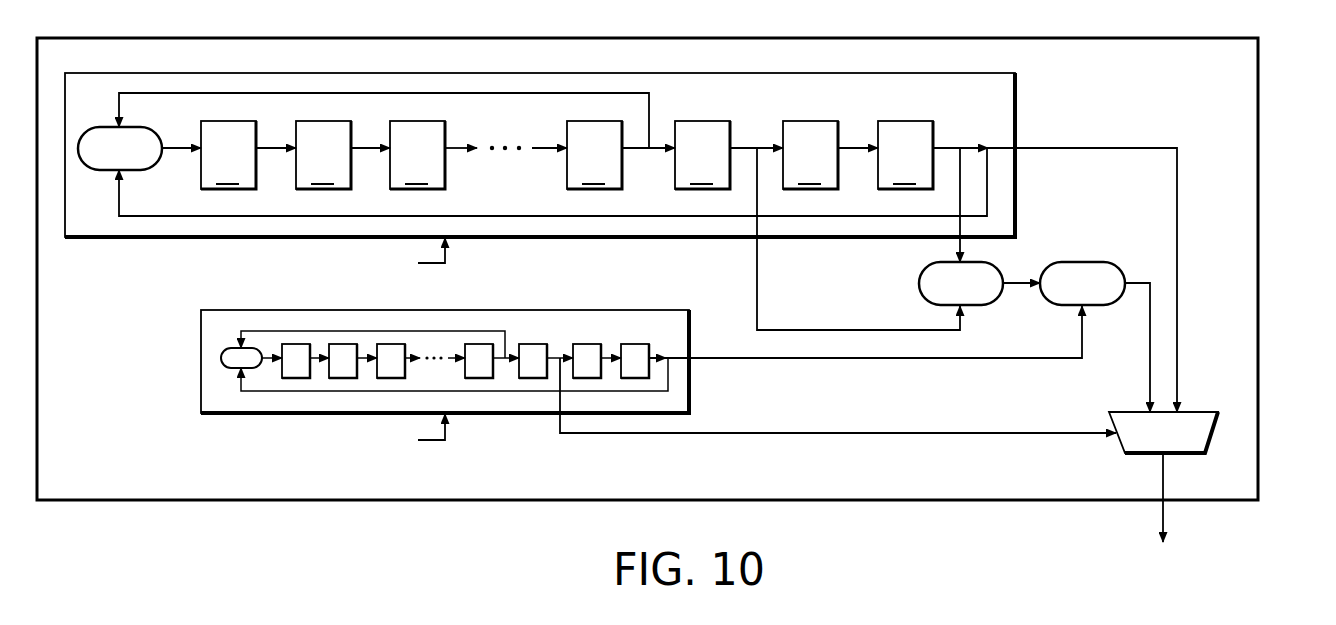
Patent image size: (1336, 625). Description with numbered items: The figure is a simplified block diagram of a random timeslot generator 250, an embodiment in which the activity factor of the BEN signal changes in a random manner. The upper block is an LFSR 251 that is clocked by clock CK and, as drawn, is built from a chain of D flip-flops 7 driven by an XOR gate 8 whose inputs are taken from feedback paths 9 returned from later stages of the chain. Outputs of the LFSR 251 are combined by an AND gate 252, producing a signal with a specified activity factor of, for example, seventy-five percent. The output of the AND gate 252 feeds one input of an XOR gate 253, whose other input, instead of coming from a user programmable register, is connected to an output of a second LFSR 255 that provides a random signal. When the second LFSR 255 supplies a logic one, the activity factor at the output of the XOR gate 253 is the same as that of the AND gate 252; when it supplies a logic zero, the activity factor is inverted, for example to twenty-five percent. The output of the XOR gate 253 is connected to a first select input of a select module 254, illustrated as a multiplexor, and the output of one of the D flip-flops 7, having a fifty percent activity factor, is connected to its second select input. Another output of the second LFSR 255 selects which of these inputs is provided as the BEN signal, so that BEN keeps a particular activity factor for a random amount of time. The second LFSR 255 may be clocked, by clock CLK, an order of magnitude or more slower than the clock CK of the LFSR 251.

The D flip-flop 7 is at (567, 155).
The XOR gate of LFSR 8 is at (128, 172).
The feedback path 9 is at (649, 108).
The random timeslot generator 250 is at (1259, 137).
The LFSR 251 is at (621, 242).
The AND gate 252 is at (919, 282).
The XOR gate 253 is at (1082, 262).
The select module 254 is at (1210, 412).
The second LFSR 255 is at (567, 310).